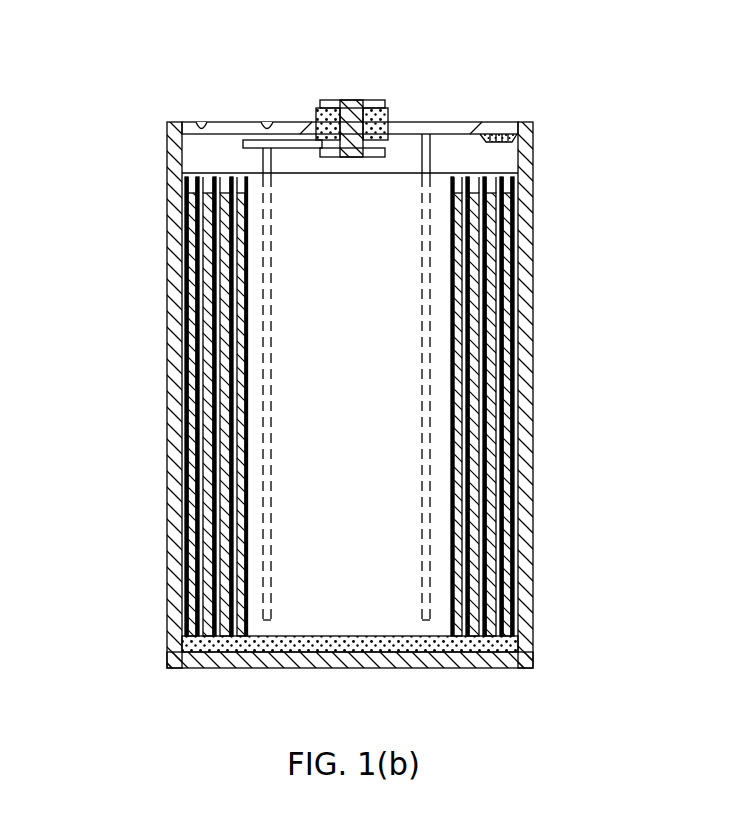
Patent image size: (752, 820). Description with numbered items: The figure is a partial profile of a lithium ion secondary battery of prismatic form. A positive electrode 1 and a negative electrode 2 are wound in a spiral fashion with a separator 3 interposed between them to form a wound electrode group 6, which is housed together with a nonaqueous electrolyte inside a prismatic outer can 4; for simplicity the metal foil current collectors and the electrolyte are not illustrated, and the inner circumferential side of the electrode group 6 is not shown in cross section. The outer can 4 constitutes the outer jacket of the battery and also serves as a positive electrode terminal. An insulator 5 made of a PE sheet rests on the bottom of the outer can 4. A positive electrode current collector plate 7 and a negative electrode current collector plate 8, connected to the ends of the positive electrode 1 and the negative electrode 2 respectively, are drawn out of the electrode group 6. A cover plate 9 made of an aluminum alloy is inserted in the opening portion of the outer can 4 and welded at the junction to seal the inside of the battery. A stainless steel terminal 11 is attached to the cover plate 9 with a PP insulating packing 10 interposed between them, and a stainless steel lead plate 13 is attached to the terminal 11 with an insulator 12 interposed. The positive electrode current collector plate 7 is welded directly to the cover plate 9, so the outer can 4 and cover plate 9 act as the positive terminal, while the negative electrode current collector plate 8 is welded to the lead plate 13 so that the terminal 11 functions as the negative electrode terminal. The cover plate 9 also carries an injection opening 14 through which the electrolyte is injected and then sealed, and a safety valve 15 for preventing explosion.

The positive electrode 1 is at (183, 322).
The negative electrode 2 is at (200, 445).
The separator 3 is at (205, 553).
The outer can 4 is at (535, 426).
The insulator 5 is at (305, 655).
The electrode group 6 is at (300, 277).
The positive electrode current collector plate 7 is at (431, 157).
The negative electrode current collector plate 8 is at (243, 145).
The cover plate 9 is at (448, 123).
The insulating packing 10 is at (385, 112).
The terminal 11 is at (347, 103).
The insulator 12 is at (315, 122).
The lead plate 13 is at (280, 123).
The injection opening 14 is at (510, 123).
The safety valve 15 is at (227, 123).